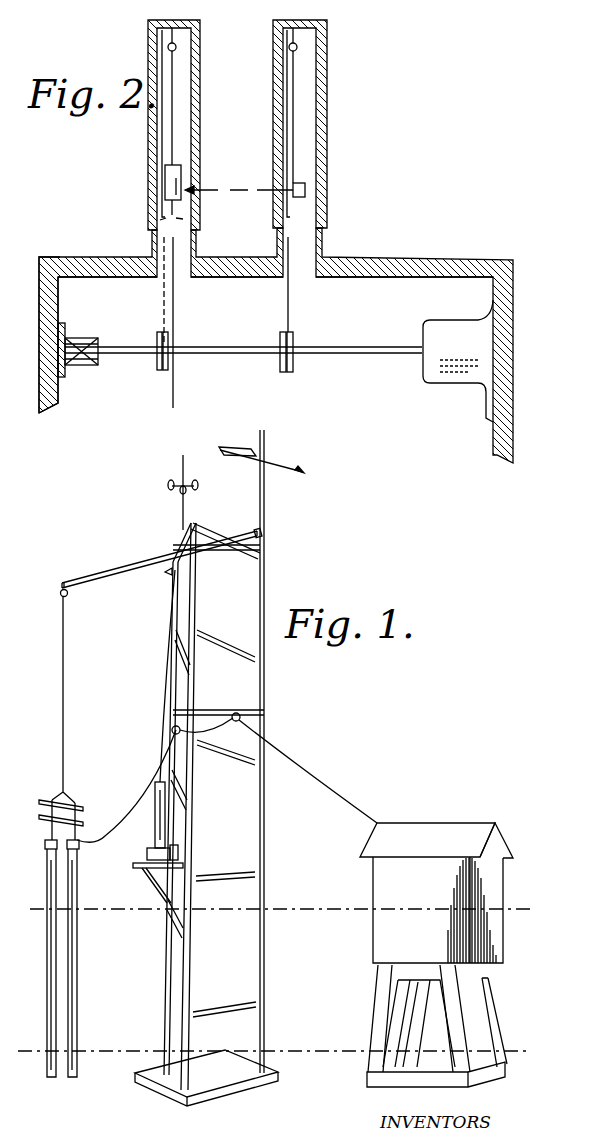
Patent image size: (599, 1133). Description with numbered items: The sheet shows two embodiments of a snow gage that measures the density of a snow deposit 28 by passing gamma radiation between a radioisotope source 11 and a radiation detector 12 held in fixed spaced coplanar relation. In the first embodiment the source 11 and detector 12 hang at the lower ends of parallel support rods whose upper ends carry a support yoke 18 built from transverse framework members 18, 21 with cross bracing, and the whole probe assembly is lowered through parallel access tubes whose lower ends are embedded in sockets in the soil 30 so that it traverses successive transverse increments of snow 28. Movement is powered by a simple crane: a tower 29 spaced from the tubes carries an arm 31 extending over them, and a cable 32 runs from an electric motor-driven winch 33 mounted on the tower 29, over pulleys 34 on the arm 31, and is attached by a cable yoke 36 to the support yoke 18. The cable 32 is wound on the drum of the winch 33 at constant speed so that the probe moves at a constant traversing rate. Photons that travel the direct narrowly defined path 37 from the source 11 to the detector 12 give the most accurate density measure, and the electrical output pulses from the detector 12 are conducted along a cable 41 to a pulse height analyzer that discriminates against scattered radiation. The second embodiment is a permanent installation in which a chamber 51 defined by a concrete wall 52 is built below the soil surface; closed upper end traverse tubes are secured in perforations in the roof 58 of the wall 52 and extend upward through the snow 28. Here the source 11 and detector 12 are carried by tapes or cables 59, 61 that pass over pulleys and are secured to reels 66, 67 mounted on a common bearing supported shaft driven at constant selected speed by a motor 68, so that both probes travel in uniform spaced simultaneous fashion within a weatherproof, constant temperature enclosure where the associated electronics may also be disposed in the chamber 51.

In FIG. 2, the source 11 is at (305, 190).
In FIG. 2, the detector 12 is at (182, 183).
In FIG. 2, the direct path 37 is at (239, 190).
In FIG. 2, the cable 41 is at (178, 381).
In FIG. 2, the chamber 51 is at (206, 318).
In FIG. 2, the concrete wall 52 is at (61, 311).
In FIG. 2, the roof 58 is at (362, 262).
In FIG. 2, the tape or cable 59 is at (289, 89).
In FIG. 2, the tape or cable 61 is at (161, 133).
In FIG. 2, the reel 66 is at (285, 338).
In FIG. 2, the reel 67 is at (158, 338).
In FIG. 2, the motor 68 is at (425, 322).
In FIG. 1, the support yoke 18 is at (6, 518).
In FIG. 1, the transverse framework member 21 is at (8, 565).
In FIG. 1, the snow deposit 28 is at (274, 980).
In FIG. 1, the tower 29 is at (268, 856).
In FIG. 1, the soil 30 is at (327, 1085).
In FIG. 1, the arm 31 is at (88, 580).
In FIG. 1, the cable 32 is at (64, 668).
In FIG. 1, the electric motor-driven winch 33 is at (150, 848).
In FIG. 1, the pulleys 34 is at (67, 596).
In FIG. 1, the cable yoke 36 is at (65, 778).